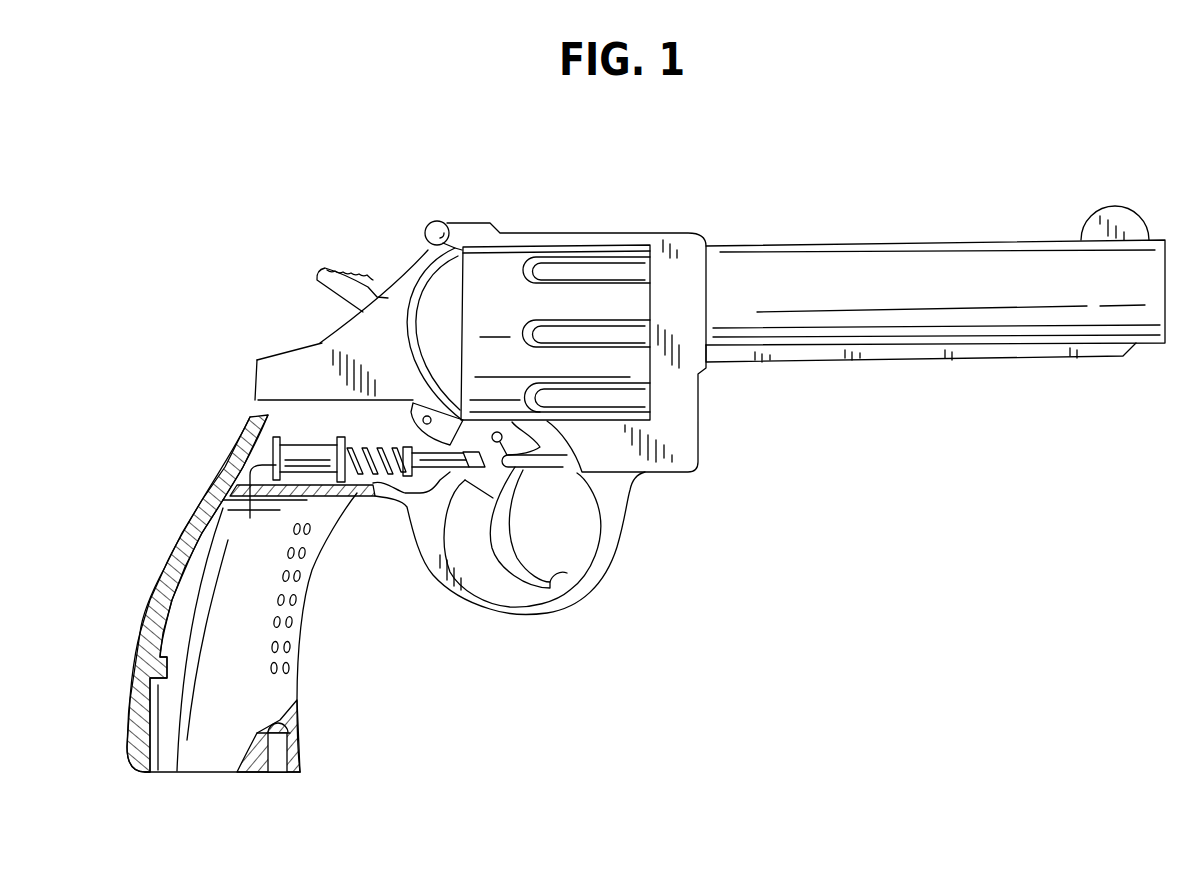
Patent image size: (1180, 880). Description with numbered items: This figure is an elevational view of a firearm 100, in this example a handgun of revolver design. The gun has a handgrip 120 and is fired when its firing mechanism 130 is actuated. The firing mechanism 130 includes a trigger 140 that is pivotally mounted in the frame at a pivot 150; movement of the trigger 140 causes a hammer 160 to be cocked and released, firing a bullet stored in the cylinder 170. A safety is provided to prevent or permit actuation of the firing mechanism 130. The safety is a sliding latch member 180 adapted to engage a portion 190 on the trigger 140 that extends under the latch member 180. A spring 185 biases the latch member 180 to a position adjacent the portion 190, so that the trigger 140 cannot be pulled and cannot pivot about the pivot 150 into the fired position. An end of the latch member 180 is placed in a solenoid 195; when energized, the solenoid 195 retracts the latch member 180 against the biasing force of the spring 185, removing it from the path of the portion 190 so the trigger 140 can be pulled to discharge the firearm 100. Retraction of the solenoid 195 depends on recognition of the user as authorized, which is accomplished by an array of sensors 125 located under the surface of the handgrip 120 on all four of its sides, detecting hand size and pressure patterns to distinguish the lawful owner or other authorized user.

The firearm 100 is at (705, 238).
The handgrip 120 is at (158, 572).
The array of sensors 125 is at (292, 633).
The firing mechanism 130 is at (330, 312).
The trigger 140 is at (568, 573).
The pivot 150 is at (523, 466).
The hammer 160 is at (378, 297).
The cylinder 170 is at (510, 262).
The sliding latch member 180 is at (432, 466).
The spring 185 is at (370, 443).
The portion on trigger 190 is at (490, 497).
The solenoid 195 is at (293, 440).